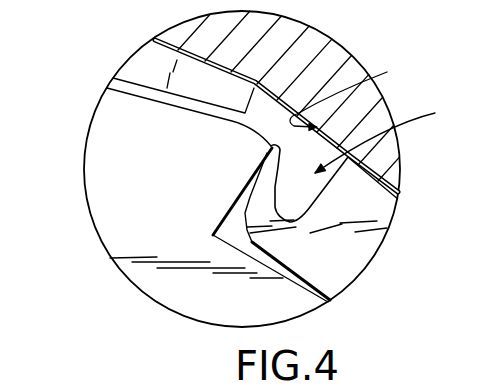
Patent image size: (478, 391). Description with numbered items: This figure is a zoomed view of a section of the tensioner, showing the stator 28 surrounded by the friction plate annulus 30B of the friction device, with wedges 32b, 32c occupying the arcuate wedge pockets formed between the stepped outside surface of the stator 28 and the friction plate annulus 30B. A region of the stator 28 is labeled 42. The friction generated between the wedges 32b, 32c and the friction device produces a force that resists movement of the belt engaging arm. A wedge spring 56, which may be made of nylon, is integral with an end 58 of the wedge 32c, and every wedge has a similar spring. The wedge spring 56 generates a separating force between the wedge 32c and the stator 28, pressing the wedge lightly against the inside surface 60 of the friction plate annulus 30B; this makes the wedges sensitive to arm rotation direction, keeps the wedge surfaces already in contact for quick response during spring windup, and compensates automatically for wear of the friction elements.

The stator 28 is at (110, 210).
The friction plate annulus 30B is at (325, 53).
The wedge 32b is at (143, 62).
The wedge 32c is at (357, 258).
The recess 42 is at (166, 177).
The wedge spring 56 is at (390, 135).
The end of the wedge 58 is at (245, 249).
The inside surface of friction plate annulus 60 is at (360, 93).